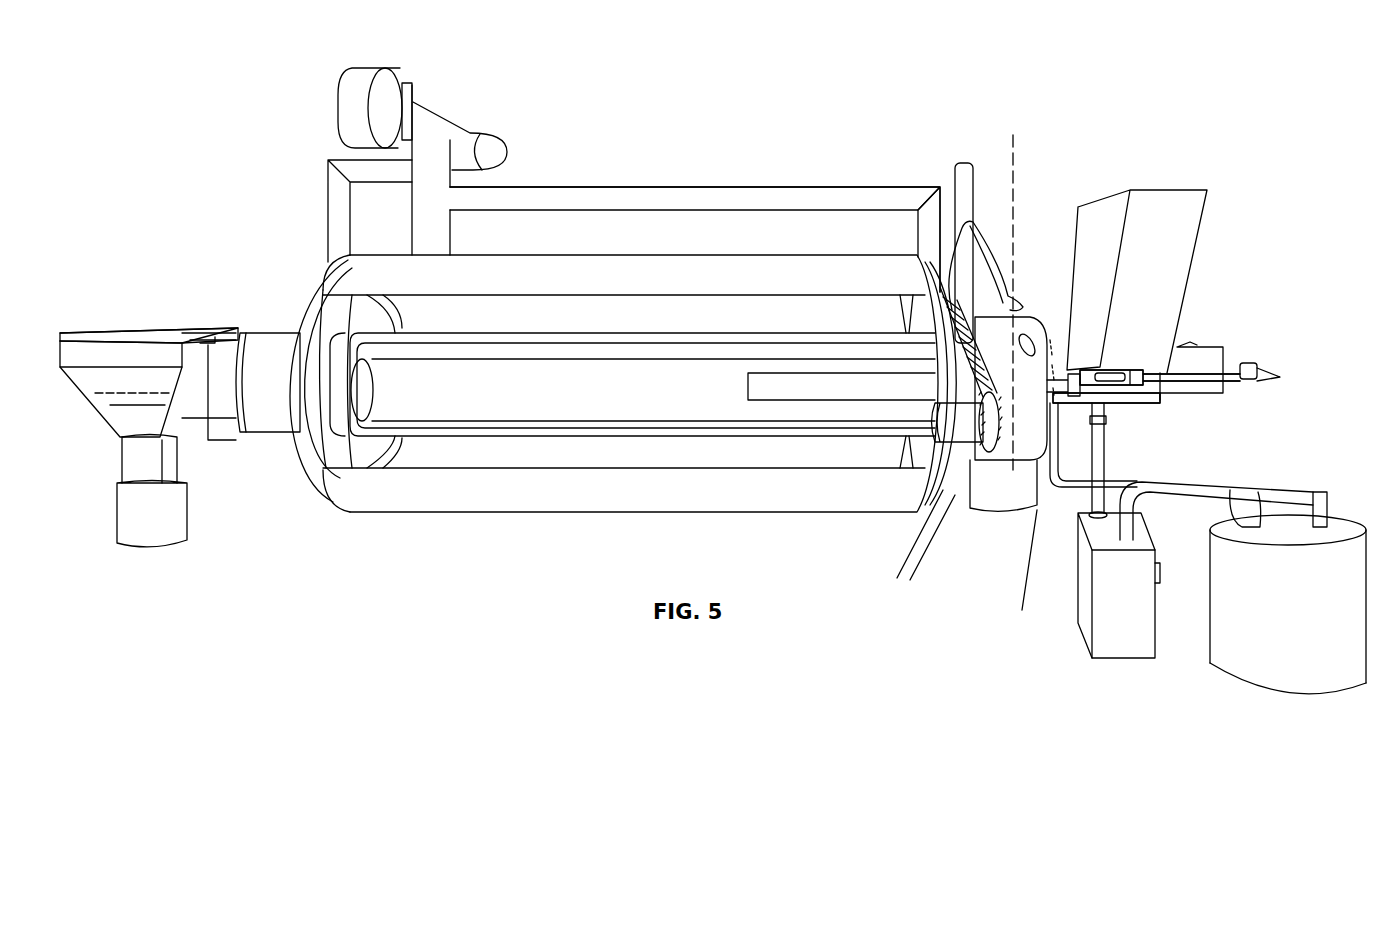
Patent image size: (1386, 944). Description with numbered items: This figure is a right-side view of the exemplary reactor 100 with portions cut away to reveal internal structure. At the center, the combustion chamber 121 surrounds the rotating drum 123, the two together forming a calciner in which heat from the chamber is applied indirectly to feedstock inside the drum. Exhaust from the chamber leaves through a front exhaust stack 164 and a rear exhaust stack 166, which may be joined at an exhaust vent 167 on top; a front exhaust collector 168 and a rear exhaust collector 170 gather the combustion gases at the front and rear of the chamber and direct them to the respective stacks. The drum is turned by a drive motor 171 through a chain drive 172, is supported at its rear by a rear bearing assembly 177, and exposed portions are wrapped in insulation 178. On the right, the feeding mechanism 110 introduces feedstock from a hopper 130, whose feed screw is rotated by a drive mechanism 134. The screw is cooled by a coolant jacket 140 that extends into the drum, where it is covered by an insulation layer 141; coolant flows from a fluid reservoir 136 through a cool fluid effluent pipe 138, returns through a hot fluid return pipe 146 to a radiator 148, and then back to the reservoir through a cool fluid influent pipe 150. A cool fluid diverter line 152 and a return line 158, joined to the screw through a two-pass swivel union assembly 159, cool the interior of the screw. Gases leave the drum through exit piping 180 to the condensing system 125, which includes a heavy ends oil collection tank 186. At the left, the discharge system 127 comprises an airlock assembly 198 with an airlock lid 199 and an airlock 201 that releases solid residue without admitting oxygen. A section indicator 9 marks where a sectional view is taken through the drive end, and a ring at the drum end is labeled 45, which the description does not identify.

The reactor 100 is at (1050, 162).
The feeding mechanism 110 is at (1065, 376).
The combustion chamber 121 is at (648, 510).
The rotating drum 123 is at (538, 336).
The condensing system 125 is at (968, 512).
The discharge system 127 is at (180, 457).
The hopper 130 is at (1207, 190).
The drive mechanism 134 is at (1197, 345).
The fluid reservoir 136 is at (1247, 680).
The cool fluid effluent pipe 138 is at (1318, 497).
The coolant jacket 140 is at (1077, 400).
The insulation layer 141 is at (694, 390).
The hot fluid return pipe 146 is at (1098, 452).
The radiator 148 is at (1090, 656).
The cool fluid influent pipe 150 is at (1243, 500).
The cool fluid diverter line 152 is at (1237, 382).
The return line 158 is at (1270, 367).
The two-pass swivel union assembly 159 is at (1253, 363).
The front exhaust stack 164 is at (370, 82).
The rear exhaust stack 166 is at (328, 202).
The exhaust vent 167 is at (437, 128).
The front exhaust collector 168 is at (897, 578).
The rear exhaust collector 170 is at (333, 504).
The drive motor 171 is at (942, 432).
The chain drive 172 is at (963, 312).
The rear bearing assembly 177 is at (203, 418).
The insulation 178 is at (242, 330).
The exit piping 180 is at (970, 220).
The heavy ends oil collection tank 186 is at (1033, 512).
The airlock assembly 198 is at (83, 388).
The airlock lid 199 is at (100, 331).
The airlock 201 is at (128, 455).
The flange ring 45 is at (328, 486).
The section line 9- 9 is at (1013, 142).